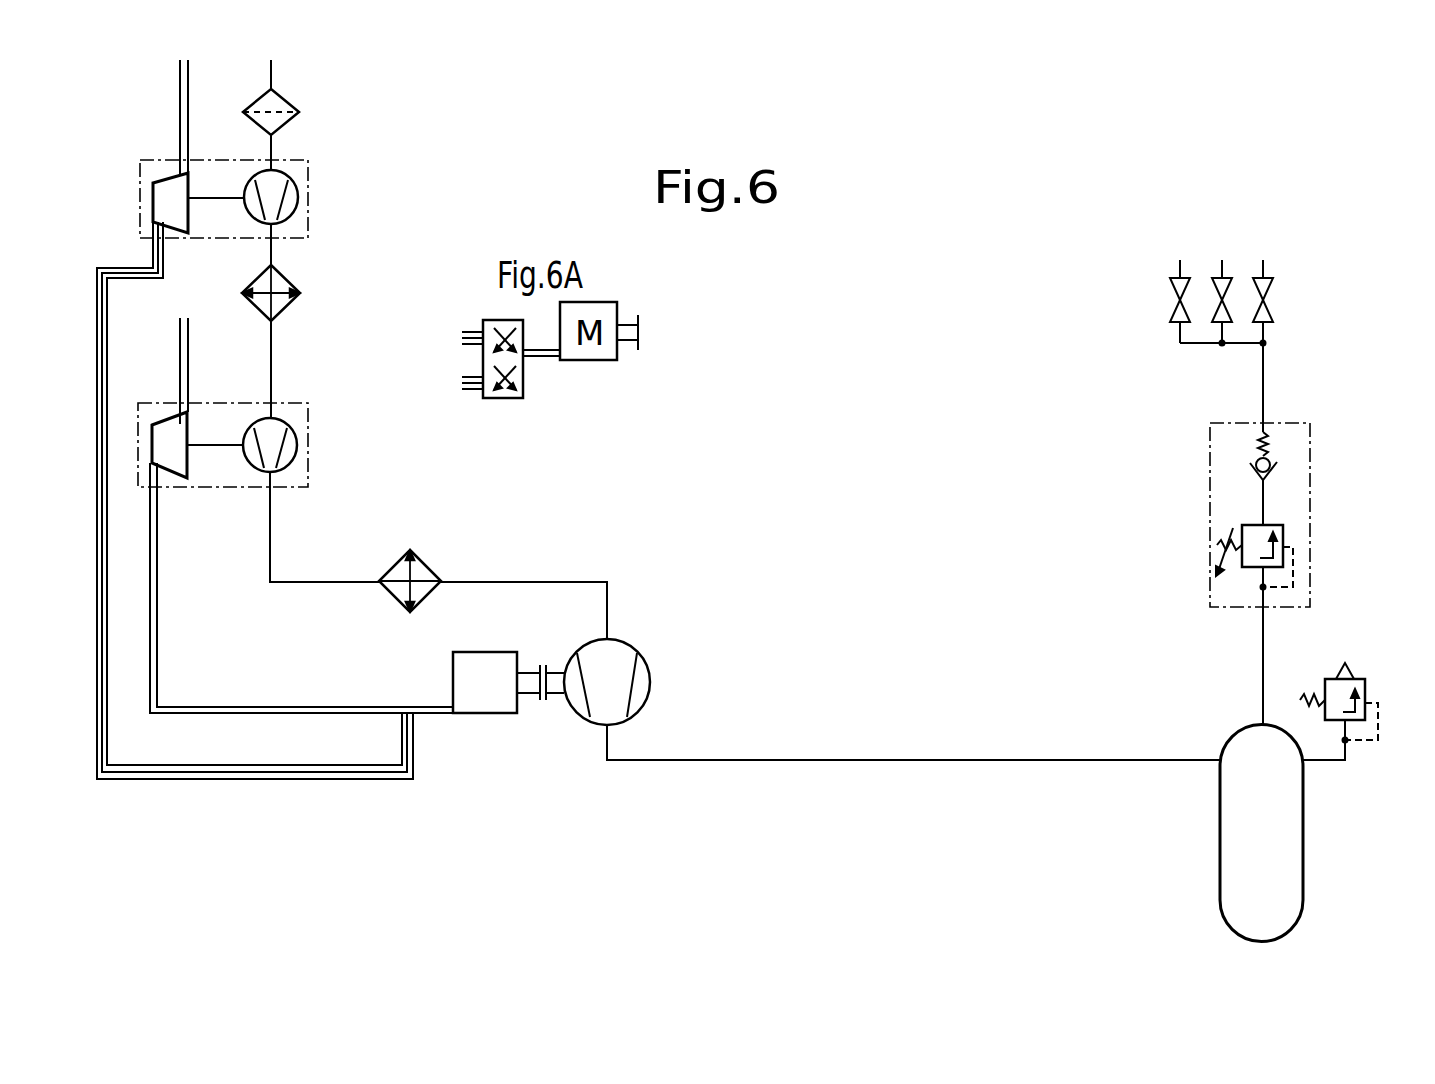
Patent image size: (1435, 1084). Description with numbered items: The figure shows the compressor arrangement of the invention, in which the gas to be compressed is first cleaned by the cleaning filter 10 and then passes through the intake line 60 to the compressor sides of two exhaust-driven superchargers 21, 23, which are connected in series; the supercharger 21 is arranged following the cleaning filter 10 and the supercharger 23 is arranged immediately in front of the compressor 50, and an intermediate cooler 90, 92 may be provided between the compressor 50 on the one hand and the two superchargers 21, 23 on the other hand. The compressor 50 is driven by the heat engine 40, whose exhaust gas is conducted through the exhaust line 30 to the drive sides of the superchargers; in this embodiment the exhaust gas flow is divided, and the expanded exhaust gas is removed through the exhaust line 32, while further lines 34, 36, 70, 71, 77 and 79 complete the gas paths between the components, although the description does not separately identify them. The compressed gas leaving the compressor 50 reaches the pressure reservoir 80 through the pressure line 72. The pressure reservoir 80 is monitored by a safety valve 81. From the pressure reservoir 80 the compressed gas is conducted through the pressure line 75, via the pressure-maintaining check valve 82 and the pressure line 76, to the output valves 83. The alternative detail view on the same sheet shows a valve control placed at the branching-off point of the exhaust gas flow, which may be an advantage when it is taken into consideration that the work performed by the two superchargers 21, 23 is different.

The cleaning filter 10 is at (300, 107).
The exhaust-driven supercharger 21 is at (300, 195).
The exhaust-driven supercharger 23 is at (298, 445).
The exhaust line 30 is at (150, 782).
The exhaust line 32 is at (177, 105).
The inlet line of second compressor 34 is at (178, 355).
The drive line 36 is at (237, 707).
The heat engine 40 is at (485, 652).
The compressor 50 is at (650, 677).
The intake line 60 is at (273, 148).
The intermediate line 70 is at (273, 253).
The connecting line 71 is at (272, 365).
The pressure line 72 is at (750, 760).
The pressure line 75 is at (1263, 650).
The pressure line 76 is at (1263, 370).
The outlet line of second compressor 77 is at (333, 580).
The pump suction line 79 is at (557, 578).
The pressure reservoir 80 is at (1303, 857).
The safety valve 81 is at (1368, 708).
The pressure-maintaining check valve 82 is at (1283, 527).
The output valves 83 is at (1273, 297).
The intermediate cooler 90 is at (290, 287).
The intermediate cooler 92 is at (425, 560).